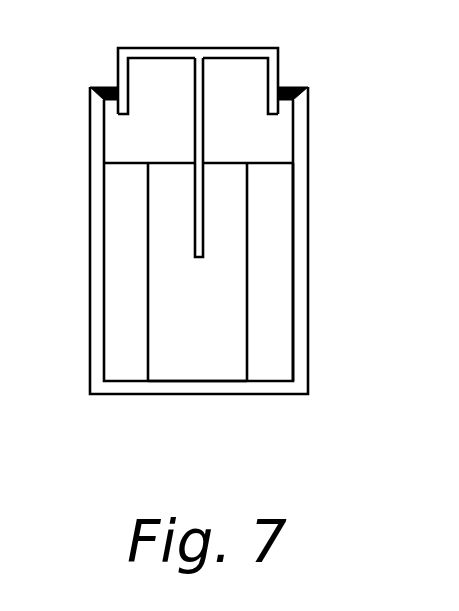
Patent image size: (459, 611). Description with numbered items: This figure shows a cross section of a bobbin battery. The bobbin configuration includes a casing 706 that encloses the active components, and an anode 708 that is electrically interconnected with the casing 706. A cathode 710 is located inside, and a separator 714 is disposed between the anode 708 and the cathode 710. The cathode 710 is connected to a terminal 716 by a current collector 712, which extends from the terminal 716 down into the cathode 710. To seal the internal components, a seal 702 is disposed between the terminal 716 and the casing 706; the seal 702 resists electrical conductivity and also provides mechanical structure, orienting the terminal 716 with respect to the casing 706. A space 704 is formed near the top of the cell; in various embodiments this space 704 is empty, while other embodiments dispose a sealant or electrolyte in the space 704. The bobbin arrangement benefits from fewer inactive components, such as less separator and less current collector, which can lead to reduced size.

The seal 702 is at (292, 86).
The space 704 is at (268, 143).
The casing 706 is at (303, 178).
The anode 708 is at (275, 233).
The cathode 710 is at (233, 283).
The current collector 712 is at (195, 218).
The separator 714 is at (148, 312).
The terminal 716 is at (199, 47).